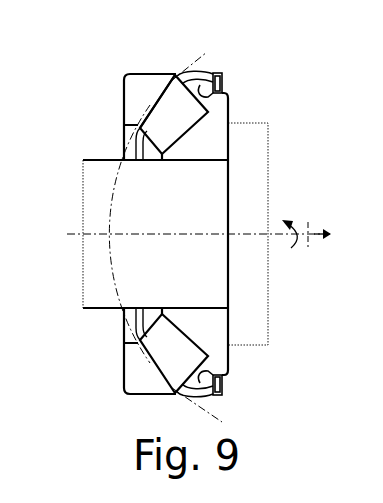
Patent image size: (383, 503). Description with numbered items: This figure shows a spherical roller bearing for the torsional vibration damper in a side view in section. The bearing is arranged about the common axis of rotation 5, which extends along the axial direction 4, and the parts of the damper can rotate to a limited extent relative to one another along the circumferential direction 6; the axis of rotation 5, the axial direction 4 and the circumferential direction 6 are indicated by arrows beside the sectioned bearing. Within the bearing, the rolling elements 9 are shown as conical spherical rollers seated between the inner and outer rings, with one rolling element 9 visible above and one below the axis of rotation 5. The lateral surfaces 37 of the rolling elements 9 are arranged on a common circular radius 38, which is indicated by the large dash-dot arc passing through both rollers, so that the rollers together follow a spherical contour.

The rolling elements 9 is at (188, 120).
The lateral surfaces 37 is at (152, 100).
The common circular radius 38 is at (113, 183).
The axis of rotation 5 is at (274, 232).
The circumferential direction 6 is at (292, 244).
The axial direction 4 is at (325, 249).